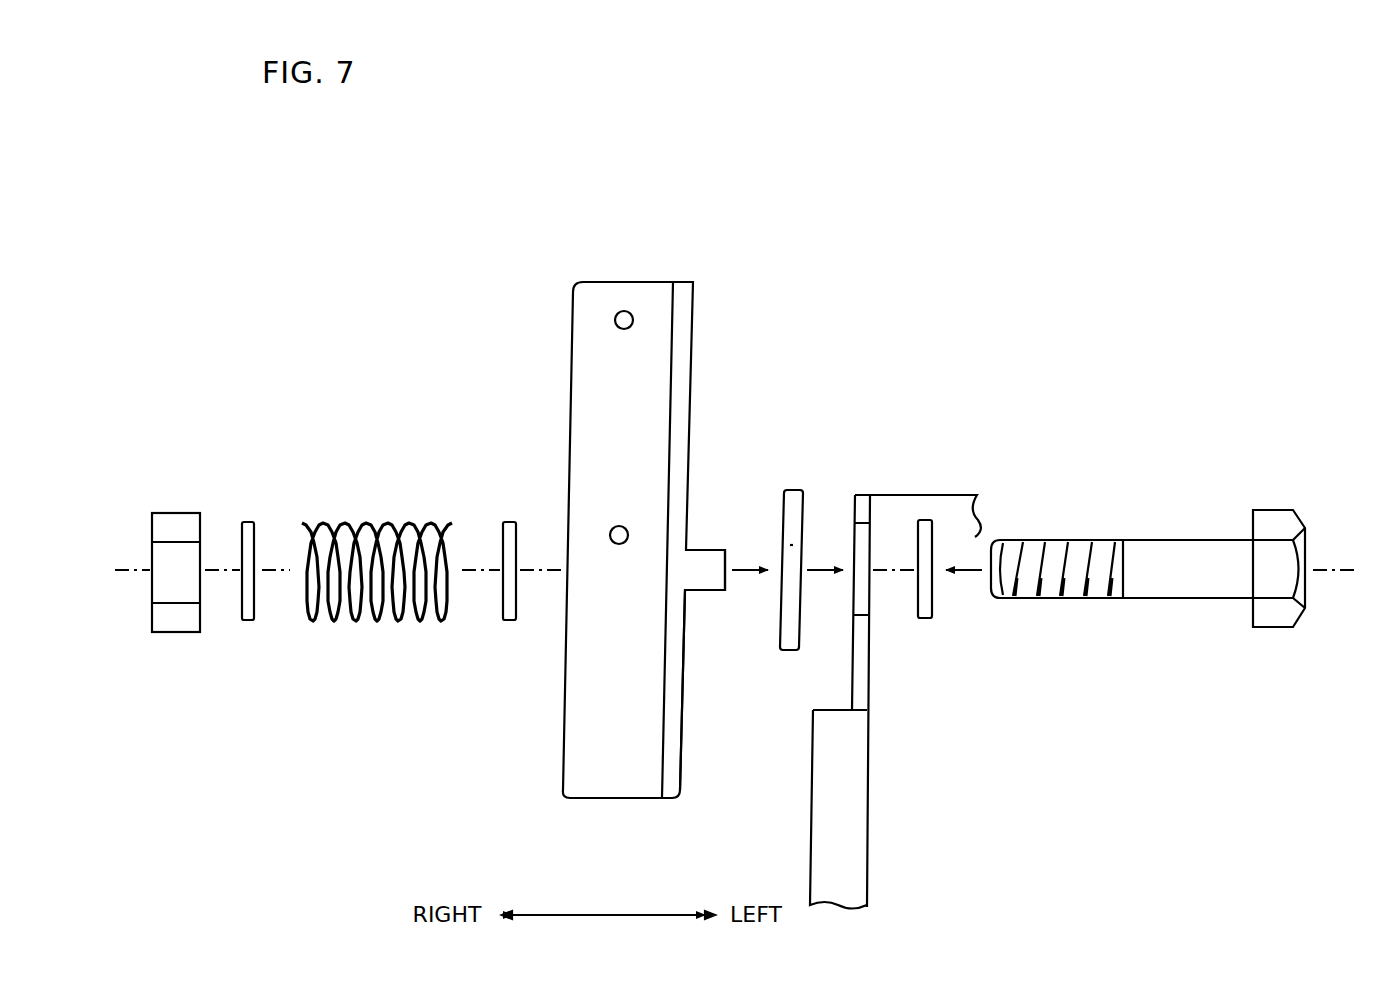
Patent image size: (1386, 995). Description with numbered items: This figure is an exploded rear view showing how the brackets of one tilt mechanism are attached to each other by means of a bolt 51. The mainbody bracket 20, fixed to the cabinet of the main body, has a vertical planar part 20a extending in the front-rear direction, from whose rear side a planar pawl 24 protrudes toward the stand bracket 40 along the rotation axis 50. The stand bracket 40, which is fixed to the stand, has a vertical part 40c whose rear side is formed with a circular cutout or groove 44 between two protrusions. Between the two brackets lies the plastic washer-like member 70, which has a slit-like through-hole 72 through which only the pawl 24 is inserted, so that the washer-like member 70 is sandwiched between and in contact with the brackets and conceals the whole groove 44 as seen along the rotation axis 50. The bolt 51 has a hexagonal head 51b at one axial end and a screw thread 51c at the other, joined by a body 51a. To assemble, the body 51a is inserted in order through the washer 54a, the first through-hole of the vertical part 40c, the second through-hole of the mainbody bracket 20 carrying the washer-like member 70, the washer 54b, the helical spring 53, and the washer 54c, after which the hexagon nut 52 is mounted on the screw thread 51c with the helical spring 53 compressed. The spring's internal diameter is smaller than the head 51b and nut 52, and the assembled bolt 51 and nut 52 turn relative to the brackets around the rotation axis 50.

The mainbody bracket 20 is at (647, 247).
The vertical planar part 20a is at (683, 765).
The pawl 24 is at (710, 592).
The stand bracket 40 is at (899, 623).
The vertical part 40c is at (867, 850).
The groove 44 is at (867, 598).
The rotation axis 50 is at (1327, 578).
The bolt 51 is at (1165, 559).
The body of bolt 51a is at (1172, 598).
The head of bolt 51b is at (1278, 510).
The screw thread 51c is at (1058, 543).
The hexagon nut 52 is at (174, 512).
The helical spring 53 is at (384, 502).
The washer 54a is at (925, 620).
The washer 54b is at (508, 622).
The washer 54c is at (246, 622).
The washer-like member 70 is at (801, 467).
The through-hole 72 is at (782, 555).